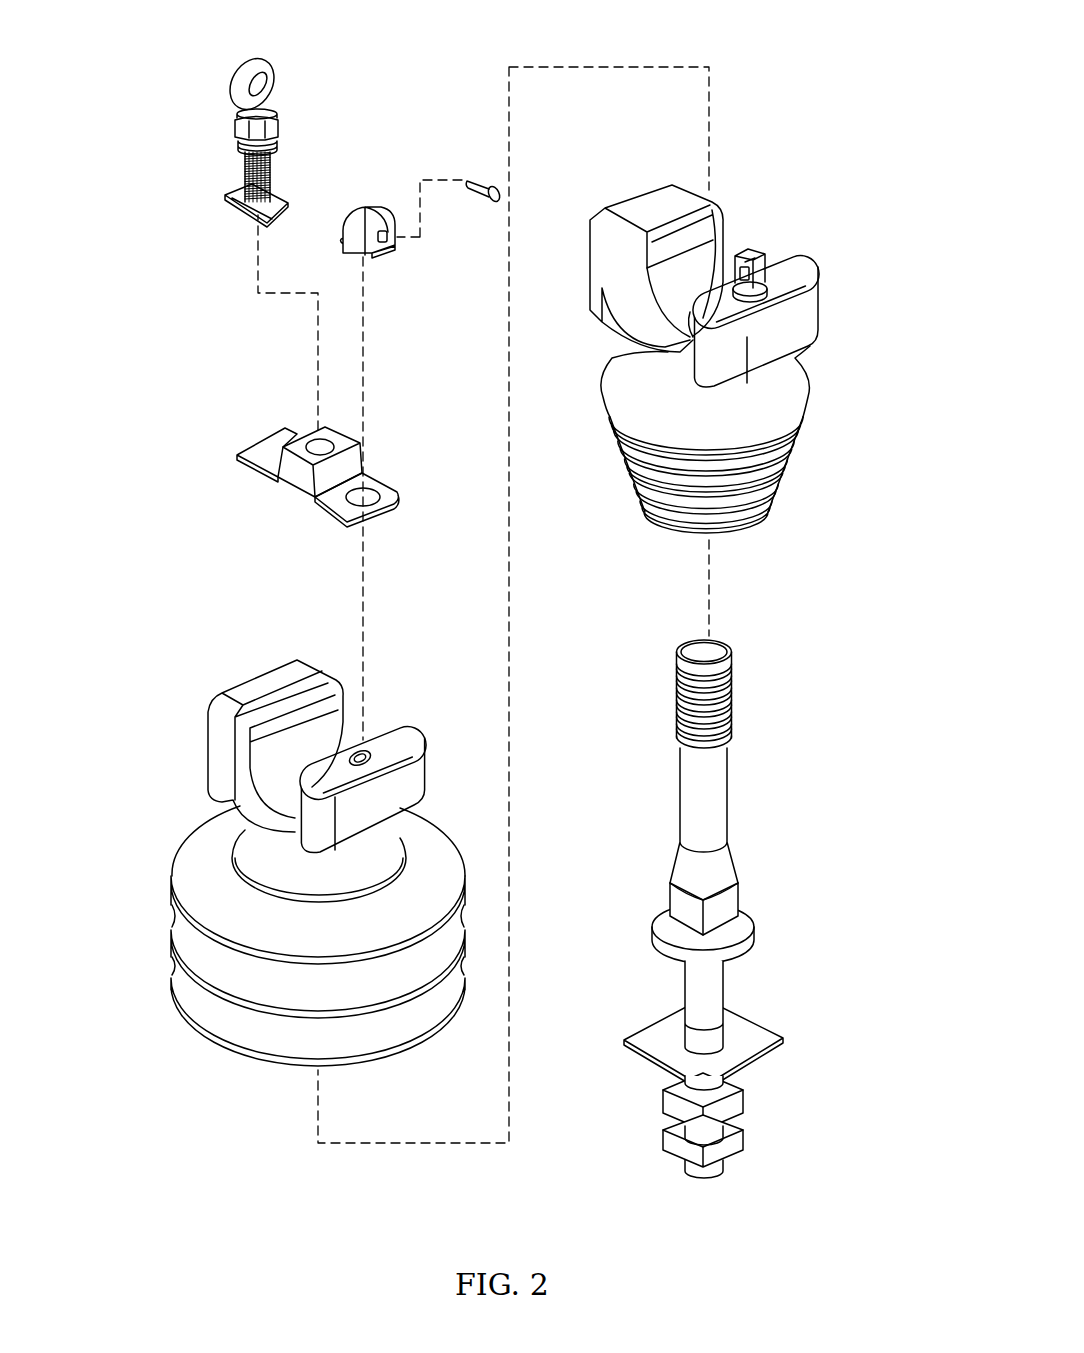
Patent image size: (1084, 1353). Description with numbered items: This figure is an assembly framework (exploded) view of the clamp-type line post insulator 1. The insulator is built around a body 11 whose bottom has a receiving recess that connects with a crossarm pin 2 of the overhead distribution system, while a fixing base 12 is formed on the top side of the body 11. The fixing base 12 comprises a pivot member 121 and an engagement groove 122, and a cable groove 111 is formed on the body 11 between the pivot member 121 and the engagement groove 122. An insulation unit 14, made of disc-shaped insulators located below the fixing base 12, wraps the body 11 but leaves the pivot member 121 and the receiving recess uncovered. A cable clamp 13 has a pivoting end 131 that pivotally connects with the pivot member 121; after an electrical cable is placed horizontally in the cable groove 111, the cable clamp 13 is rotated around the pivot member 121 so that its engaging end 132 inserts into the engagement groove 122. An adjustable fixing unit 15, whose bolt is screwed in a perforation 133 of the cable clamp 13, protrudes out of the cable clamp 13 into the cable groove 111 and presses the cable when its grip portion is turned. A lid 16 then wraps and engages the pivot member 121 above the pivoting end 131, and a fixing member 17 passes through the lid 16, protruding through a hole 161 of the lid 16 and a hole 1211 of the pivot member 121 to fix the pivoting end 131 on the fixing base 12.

The clamp-type line post insulator 1 is at (768, 95).
The crossarm pin 2 is at (806, 765).
The body 11 is at (836, 353).
The cable groove 111 is at (703, 260).
The fixing base 12 is at (806, 258).
The pivot member 121 is at (723, 297).
The hole 1211 is at (755, 258).
The engagement groove 122 is at (710, 206).
The cable clamp 13 is at (310, 440).
The pivoting end 131 is at (384, 486).
The engaging end 132 is at (255, 455).
The perforation 133 is at (306, 440).
The insulation unit 14 is at (172, 714).
The adjustable fixing unit 15 is at (202, 125).
The lid 16 is at (368, 186).
The hole 161 is at (388, 227).
The fixing member 17 is at (468, 182).